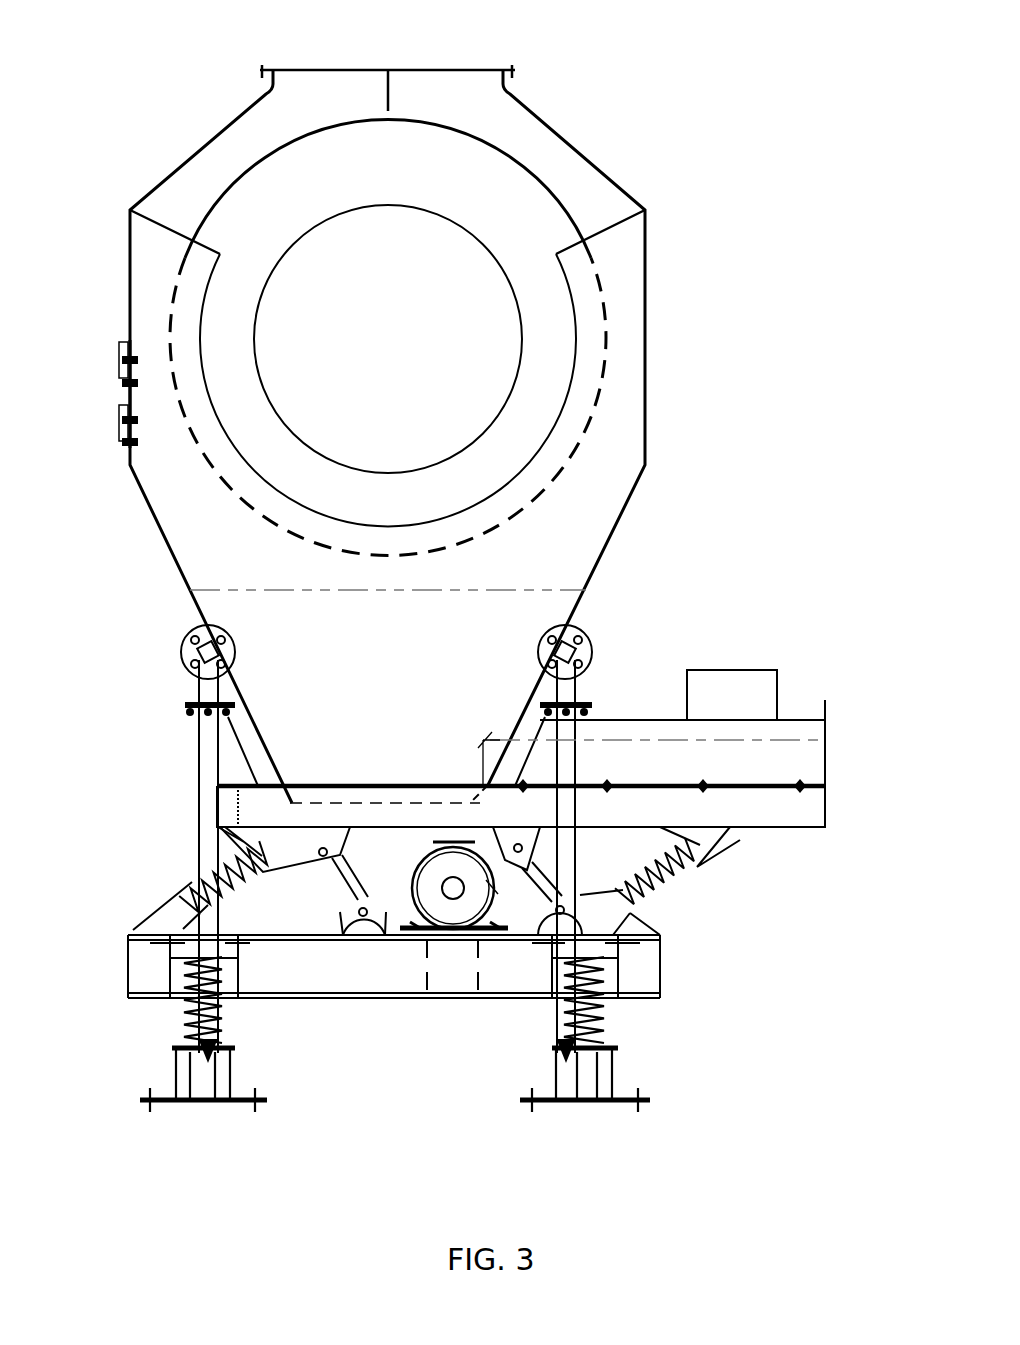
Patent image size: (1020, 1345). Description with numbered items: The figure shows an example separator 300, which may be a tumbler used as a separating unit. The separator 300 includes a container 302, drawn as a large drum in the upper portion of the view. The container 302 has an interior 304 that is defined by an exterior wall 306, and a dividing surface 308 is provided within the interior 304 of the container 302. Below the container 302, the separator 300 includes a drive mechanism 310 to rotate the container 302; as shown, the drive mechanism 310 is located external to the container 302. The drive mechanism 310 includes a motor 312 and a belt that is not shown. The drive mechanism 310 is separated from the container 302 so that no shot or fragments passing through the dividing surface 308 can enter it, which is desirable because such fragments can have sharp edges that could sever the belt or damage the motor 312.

The separator 300 is at (542, 38).
The container 302 is at (522, 140).
The interior 304 is at (362, 263).
The exterior wall 306 is at (570, 222).
The dividing surface 308 is at (200, 228).
The drive mechanism 310 is at (407, 903).
The motor 312 is at (494, 892).